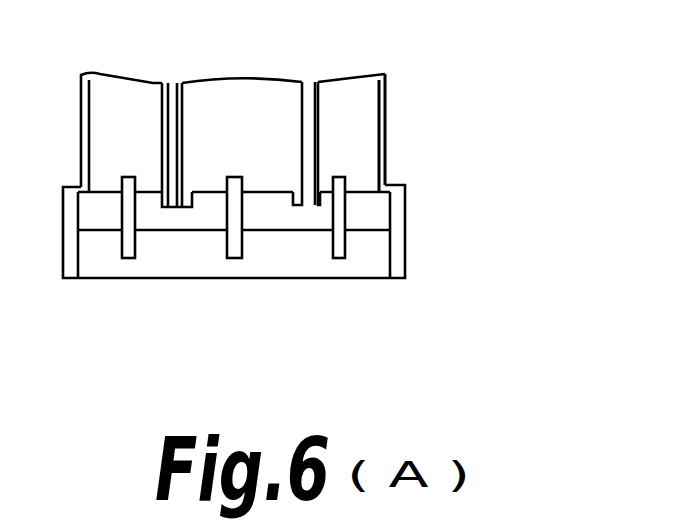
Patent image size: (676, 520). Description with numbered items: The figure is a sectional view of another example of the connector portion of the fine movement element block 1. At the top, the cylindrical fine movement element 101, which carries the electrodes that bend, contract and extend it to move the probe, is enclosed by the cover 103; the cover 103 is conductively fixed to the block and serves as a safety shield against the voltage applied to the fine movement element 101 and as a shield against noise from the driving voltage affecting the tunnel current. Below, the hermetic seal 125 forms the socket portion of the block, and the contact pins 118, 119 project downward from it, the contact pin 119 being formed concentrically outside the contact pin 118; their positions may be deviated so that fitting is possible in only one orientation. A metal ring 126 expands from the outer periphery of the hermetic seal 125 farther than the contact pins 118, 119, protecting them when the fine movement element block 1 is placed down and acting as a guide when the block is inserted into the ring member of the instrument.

The fine movement element block 1 is at (408, 65).
The fine movement element 101 is at (312, 113).
The cover 103 is at (385, 132).
The hermetic seal 125 is at (375, 215).
The metal ring 126 is at (397, 253).
The contact pin 118 is at (225, 248).
The contact pin 119 is at (122, 252).